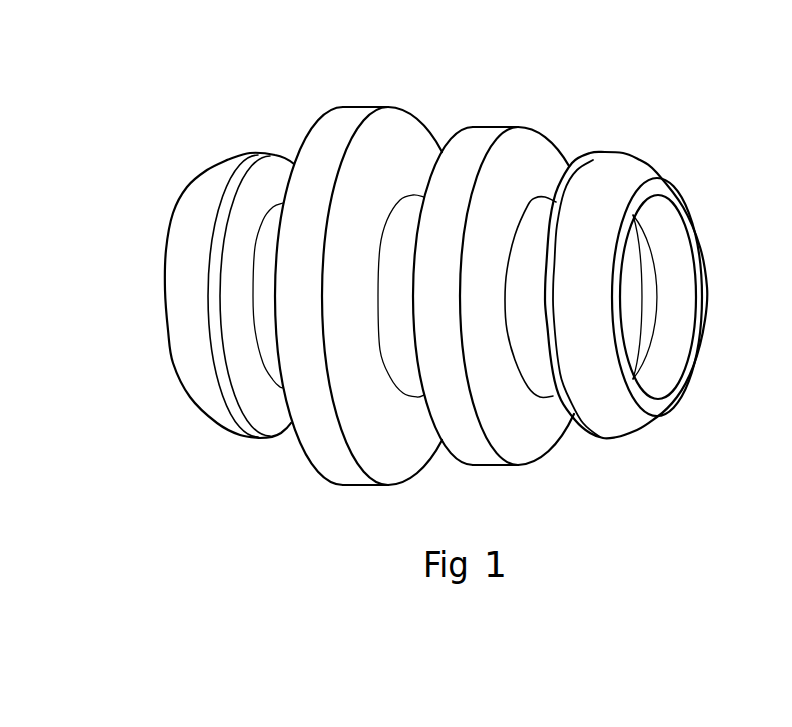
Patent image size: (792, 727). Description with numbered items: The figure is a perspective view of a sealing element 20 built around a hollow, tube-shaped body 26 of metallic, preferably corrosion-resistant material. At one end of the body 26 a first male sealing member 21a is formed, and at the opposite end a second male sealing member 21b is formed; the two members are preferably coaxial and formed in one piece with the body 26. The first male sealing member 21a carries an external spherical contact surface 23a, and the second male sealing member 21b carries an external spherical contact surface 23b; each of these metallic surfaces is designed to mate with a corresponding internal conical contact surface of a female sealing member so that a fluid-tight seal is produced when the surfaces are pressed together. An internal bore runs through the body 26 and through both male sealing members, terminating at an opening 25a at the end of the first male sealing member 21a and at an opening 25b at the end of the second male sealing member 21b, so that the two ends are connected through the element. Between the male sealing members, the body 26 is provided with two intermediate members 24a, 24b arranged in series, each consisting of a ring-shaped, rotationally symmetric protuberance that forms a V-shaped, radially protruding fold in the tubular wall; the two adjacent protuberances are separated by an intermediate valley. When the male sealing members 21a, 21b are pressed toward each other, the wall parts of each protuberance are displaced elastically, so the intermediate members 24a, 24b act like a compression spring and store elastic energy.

The sealing element 20 is at (603, 112).
The first male sealing member 21a is at (620, 173).
The second male sealing member 21b is at (235, 184).
The external spherical contact surface 23a is at (640, 430).
The external spherical contact surface 23b is at (212, 405).
The intermediate member 24a is at (482, 140).
The intermediate member 24b is at (347, 121).
The opening 25a is at (683, 292).
The opening 25b is at (162, 258).
The body 26 is at (538, 215).